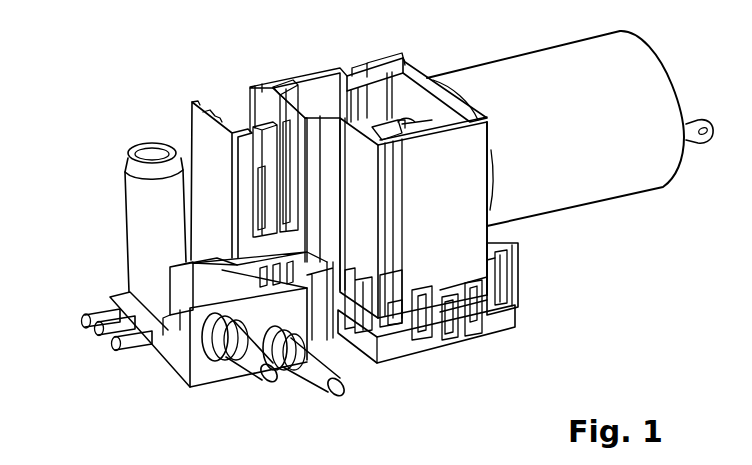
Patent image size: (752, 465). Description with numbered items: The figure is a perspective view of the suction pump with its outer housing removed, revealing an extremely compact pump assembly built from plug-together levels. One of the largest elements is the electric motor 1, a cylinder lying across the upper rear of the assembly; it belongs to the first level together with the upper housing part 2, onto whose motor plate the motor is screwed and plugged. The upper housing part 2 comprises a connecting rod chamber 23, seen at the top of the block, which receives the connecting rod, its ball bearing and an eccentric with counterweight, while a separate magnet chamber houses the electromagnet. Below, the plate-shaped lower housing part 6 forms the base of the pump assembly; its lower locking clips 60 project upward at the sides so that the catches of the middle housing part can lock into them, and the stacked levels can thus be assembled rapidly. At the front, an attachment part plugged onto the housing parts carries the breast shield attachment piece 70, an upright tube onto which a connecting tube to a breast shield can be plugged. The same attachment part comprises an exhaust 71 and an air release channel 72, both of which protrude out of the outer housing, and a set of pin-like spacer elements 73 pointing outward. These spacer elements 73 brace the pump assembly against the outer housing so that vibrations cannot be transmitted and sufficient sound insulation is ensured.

The electric motor 1 is at (612, 185).
The upper housing part 2 is at (452, 214).
The lower housing part 6 is at (412, 345).
The connecting rod chamber 23 is at (317, 93).
The lower locking clips 60 is at (520, 287).
The breast shield attachment piece 70 is at (147, 210).
The exhaust 71 is at (313, 378).
The air release channel 72 is at (247, 361).
The spacer elements 73 is at (145, 345).